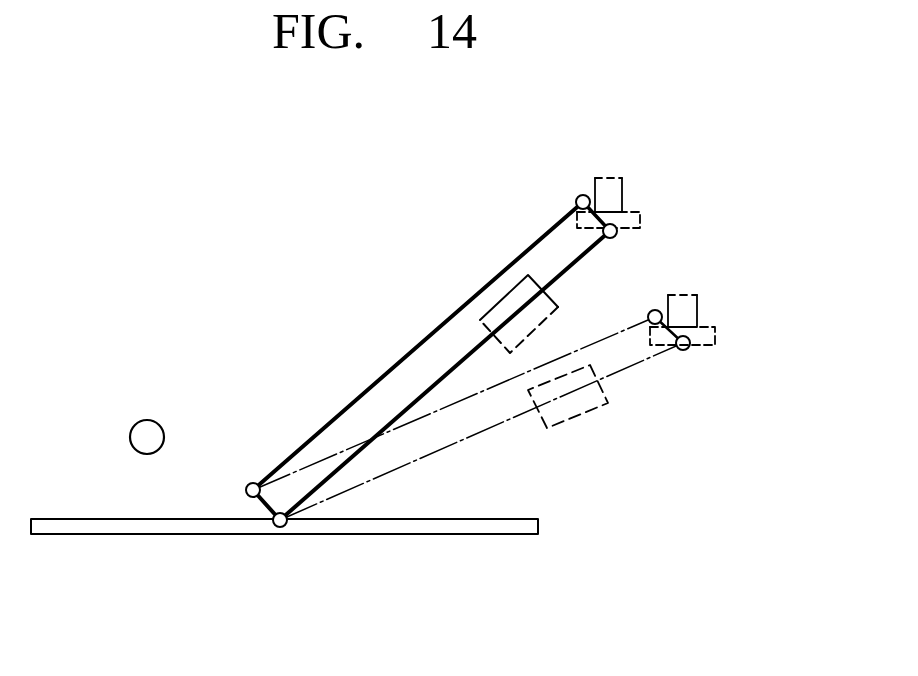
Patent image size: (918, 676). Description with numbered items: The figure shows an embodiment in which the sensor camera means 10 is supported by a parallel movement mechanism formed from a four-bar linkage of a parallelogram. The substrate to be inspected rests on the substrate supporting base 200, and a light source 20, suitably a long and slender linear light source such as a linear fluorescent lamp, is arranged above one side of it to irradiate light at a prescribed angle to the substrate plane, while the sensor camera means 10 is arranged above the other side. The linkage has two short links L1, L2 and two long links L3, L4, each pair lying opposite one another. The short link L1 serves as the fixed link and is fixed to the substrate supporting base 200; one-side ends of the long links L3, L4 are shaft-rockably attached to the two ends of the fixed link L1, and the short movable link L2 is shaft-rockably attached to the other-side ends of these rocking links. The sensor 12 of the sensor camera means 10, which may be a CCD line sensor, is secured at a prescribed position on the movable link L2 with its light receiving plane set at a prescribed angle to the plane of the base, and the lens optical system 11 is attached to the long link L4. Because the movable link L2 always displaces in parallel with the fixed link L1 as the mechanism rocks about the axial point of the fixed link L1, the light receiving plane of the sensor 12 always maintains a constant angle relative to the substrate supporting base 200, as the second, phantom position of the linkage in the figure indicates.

The sensor camera means 10 is at (459, 344).
The lens optical system 11 is at (497, 302).
The sensor 12 is at (617, 200).
The light source 20 is at (138, 430).
The substrate supporting base 200 is at (100, 527).
The fixed link L1 is at (267, 503).
The movable link L2 is at (612, 222).
The long link L3 is at (397, 362).
The long link L4 is at (575, 262).